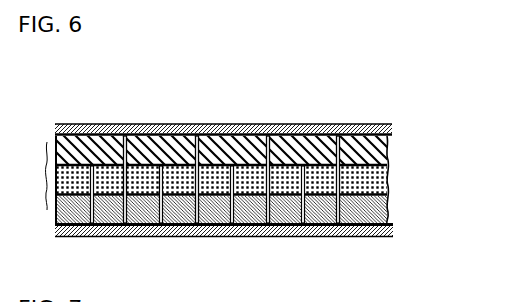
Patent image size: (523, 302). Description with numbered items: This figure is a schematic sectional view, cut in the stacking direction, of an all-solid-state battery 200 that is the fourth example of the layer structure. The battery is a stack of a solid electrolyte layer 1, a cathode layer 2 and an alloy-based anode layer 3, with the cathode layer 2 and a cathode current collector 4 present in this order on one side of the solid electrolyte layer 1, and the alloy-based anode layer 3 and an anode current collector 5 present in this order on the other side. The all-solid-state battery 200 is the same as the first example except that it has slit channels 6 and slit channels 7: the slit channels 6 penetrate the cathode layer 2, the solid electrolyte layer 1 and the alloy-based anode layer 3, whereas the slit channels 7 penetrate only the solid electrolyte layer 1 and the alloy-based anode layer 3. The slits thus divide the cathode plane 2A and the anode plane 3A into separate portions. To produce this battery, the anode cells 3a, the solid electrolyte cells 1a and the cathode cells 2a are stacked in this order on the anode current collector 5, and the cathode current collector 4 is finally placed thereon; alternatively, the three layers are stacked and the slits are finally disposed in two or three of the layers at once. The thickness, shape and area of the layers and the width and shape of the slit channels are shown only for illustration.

The all-solid-state battery 200 is at (244, 168).
The cathode current collector 4 is at (401, 124).
The cathode layer 2 is at (386, 138).
The solid electrolyte layer 1 is at (386, 167).
The alloy-based anode layer 3 is at (386, 195).
The anode current collector 5 is at (392, 233).
The slit channels 6 is at (325, 124).
The cathode cells 2a is at (142, 163).
The cathode plane 2A is at (217, 163).
The anode plane 3A is at (148, 198).
The anode cells 3a is at (182, 202).
The solid electrolyte cells 1a is at (253, 183).
The slit channels 7 is at (358, 237).